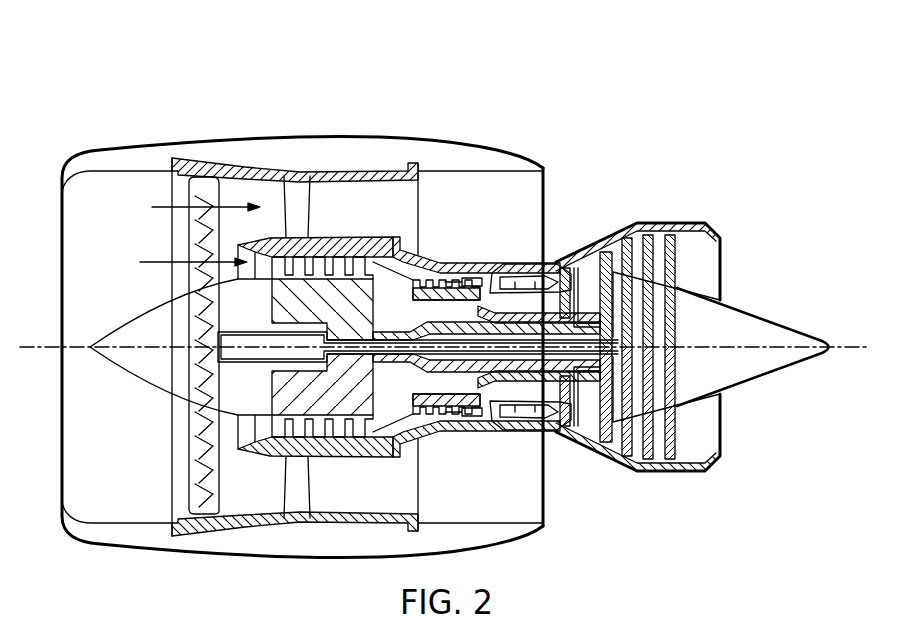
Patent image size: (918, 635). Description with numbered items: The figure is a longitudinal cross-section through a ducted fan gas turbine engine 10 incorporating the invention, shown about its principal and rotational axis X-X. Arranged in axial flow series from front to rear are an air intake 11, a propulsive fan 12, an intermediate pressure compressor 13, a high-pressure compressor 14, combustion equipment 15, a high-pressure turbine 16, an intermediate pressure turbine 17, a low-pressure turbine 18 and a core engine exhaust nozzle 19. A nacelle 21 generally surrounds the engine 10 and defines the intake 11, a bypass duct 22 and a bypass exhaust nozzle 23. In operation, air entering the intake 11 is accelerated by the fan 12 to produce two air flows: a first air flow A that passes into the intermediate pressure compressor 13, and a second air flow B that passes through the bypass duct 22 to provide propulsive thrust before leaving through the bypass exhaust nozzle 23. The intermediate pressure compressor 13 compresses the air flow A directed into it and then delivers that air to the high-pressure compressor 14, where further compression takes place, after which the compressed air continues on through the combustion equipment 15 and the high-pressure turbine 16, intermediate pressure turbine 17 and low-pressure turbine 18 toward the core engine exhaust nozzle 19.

The ducted fan gas turbine engine 10 is at (100, 93).
The air intake 11 is at (115, 171).
The propulsive fan 12 is at (197, 474).
The intermediate pressure compressor 13 is at (342, 420).
The high-pressure compressor 14 is at (453, 265).
The combustion equipment 15 is at (503, 430).
The high-pressure turbine 16 is at (563, 435).
The intermediate pressure turbine 17 is at (603, 242).
The low-pressure turbine 18 is at (612, 453).
The core engine exhaust nozzle 19 is at (712, 226).
The nacelle 21 is at (342, 137).
The bypass duct 22 is at (513, 204).
The bypass exhaust nozzle 23 is at (545, 166).